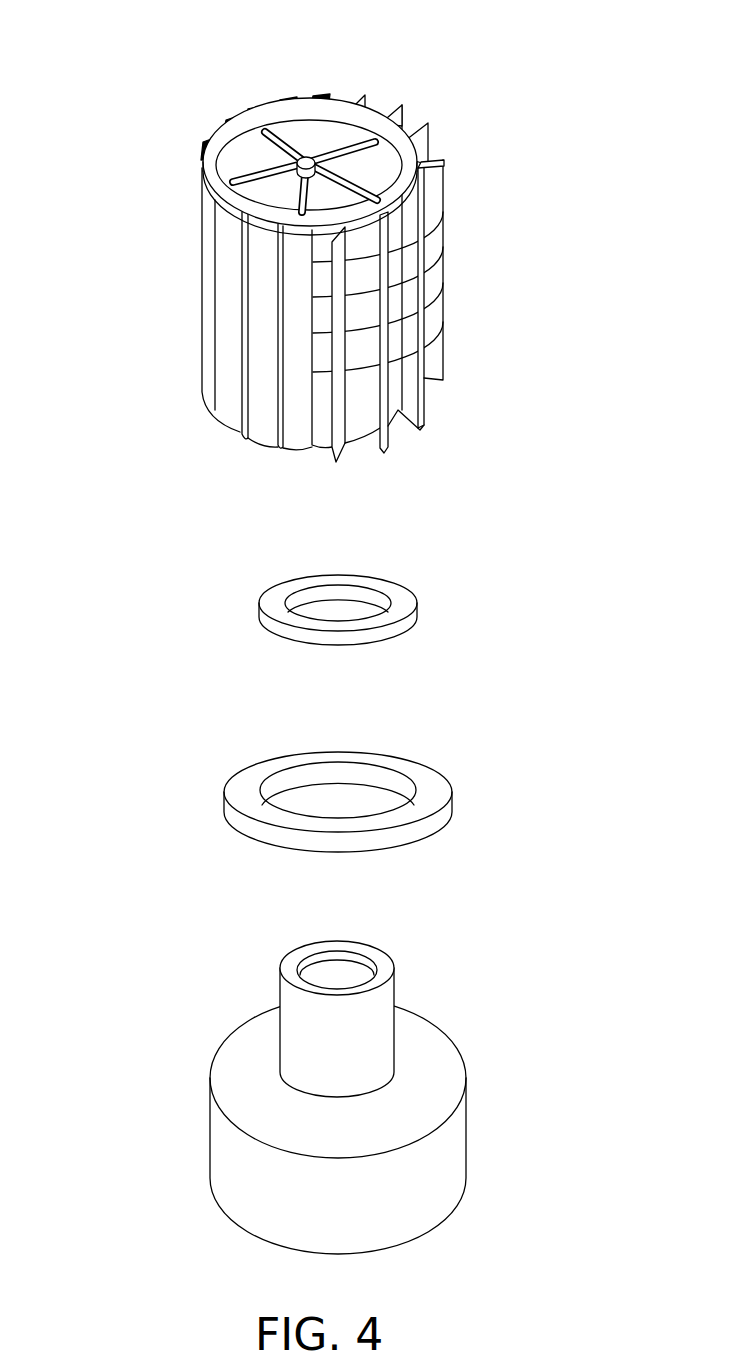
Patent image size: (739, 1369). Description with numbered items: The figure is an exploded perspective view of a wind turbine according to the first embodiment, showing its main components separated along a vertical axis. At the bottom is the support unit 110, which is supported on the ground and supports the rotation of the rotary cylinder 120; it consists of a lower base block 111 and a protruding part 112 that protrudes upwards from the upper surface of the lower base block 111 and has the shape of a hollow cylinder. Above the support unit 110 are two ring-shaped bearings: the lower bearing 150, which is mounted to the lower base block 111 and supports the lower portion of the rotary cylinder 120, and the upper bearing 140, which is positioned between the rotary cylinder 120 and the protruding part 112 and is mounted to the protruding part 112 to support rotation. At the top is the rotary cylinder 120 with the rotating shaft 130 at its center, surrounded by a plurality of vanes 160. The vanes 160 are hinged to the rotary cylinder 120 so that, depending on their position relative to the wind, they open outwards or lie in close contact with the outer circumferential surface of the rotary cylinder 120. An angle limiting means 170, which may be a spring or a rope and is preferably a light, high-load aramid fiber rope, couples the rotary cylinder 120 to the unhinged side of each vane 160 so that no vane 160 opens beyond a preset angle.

The support unit 110 is at (432, 1097).
The lower base block 111 is at (405, 1168).
The protruding part 112 is at (363, 1022).
The rotary cylinder 120 is at (200, 162).
The rotating shaft 130 is at (306, 157).
The upper bearing 140 is at (405, 602).
The lower bearing 150 is at (437, 791).
The vanes 160 is at (432, 353).
The angle limiting means 170 is at (443, 245).